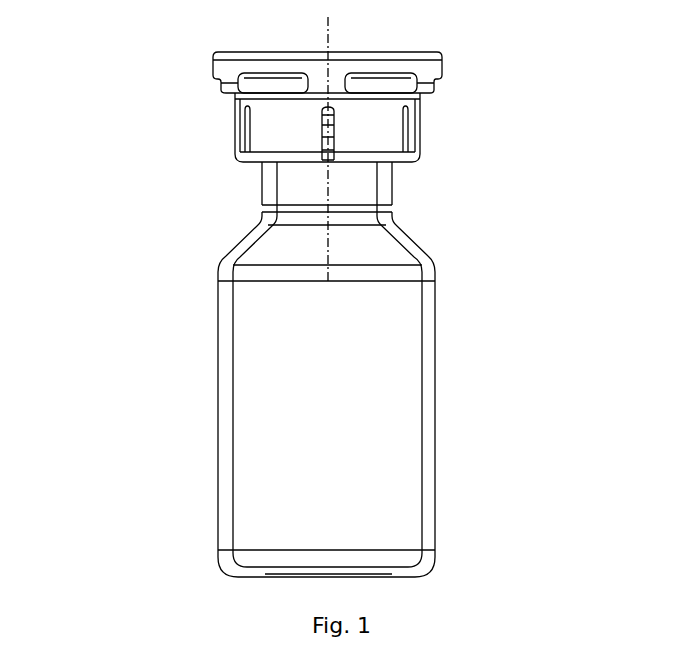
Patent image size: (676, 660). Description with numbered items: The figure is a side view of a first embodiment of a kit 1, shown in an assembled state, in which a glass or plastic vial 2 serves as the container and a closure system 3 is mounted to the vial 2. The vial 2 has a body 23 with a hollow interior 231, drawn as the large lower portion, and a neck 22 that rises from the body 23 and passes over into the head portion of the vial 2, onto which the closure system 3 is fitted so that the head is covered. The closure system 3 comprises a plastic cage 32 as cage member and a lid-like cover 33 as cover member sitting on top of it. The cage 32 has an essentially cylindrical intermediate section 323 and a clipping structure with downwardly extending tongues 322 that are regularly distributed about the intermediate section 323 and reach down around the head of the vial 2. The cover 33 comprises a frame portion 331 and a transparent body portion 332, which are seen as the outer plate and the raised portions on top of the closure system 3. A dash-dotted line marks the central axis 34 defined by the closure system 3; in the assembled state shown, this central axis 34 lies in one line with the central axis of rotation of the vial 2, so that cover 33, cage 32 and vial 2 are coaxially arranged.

The kit 1 is at (172, 447).
The vial 2 is at (192, 357).
The neck 22 is at (368, 186).
The body 23 is at (424, 384).
The hollow interior 231 is at (383, 488).
The closure system 3 is at (485, 112).
The cage 32 is at (215, 152).
The tongues 322 is at (420, 143).
The intermediate section 323 is at (235, 102).
The cover 33 is at (465, 75).
The frame portion 331 is at (225, 68).
The transparent body portion 332 is at (230, 85).
The central axis 34 is at (328, 23).